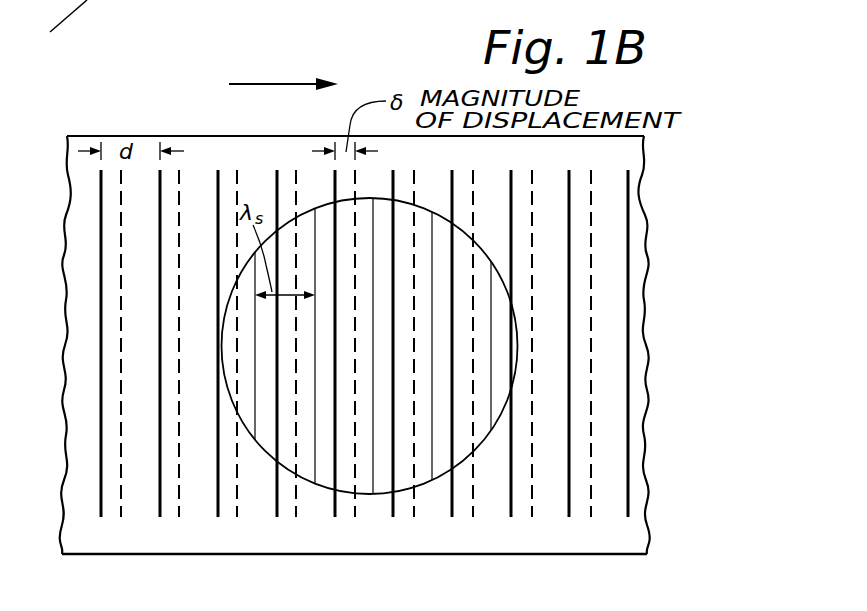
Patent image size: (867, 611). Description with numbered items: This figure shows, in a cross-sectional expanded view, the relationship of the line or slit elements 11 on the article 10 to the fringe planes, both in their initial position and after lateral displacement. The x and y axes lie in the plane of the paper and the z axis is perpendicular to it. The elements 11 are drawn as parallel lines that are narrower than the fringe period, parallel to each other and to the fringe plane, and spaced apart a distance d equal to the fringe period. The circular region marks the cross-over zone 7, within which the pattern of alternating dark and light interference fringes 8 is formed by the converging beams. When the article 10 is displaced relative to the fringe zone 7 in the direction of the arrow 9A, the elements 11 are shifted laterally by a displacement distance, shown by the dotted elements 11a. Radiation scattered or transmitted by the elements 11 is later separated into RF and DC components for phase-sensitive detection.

The cross-over zone 7 is at (375, 500).
The interference fringes 8 is at (430, 228).
The arrow 9A is at (248, 84).
The article 10 is at (622, 157).
The line or slit elements 11 is at (328, 513).
The dotted elements 11a is at (294, 168).